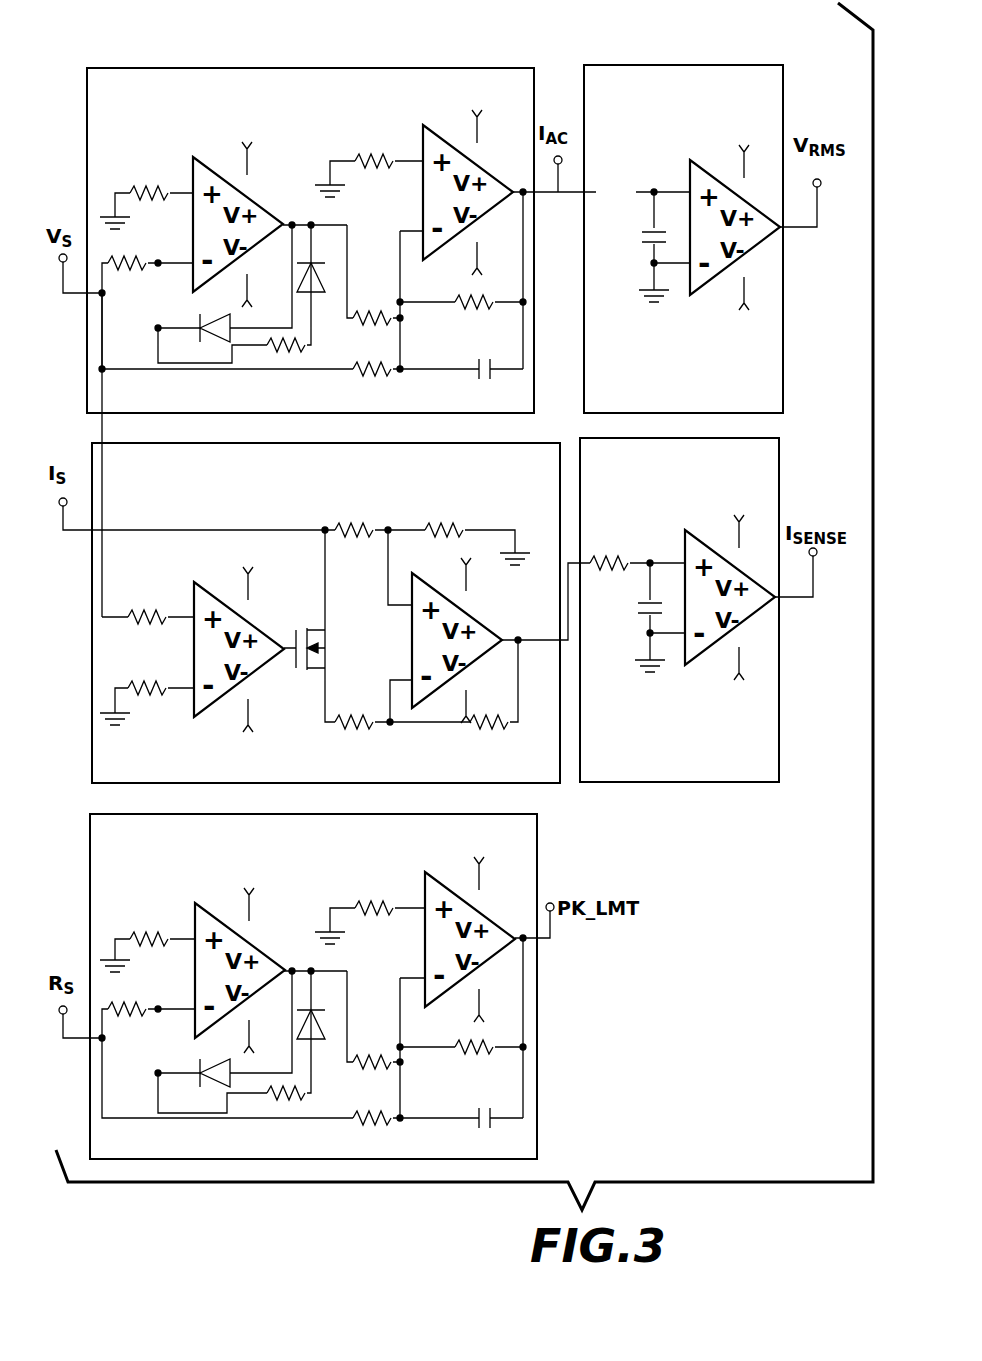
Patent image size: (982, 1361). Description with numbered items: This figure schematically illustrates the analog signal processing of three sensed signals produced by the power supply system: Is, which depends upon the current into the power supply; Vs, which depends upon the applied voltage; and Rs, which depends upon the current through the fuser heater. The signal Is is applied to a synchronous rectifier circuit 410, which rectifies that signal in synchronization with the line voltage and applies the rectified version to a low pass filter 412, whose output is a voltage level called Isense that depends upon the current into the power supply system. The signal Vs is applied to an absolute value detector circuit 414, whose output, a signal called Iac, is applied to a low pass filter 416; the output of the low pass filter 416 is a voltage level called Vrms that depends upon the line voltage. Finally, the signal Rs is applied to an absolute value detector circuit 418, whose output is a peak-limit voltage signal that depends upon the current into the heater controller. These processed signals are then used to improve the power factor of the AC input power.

The absolute value detector circuit 414 is at (246, 66).
The low pass filter 416 is at (708, 64).
The synchronous rectifier circuit 410 is at (538, 784).
The low pass filter 412 is at (697, 784).
The absolute value detector circuit 418 is at (538, 1115).